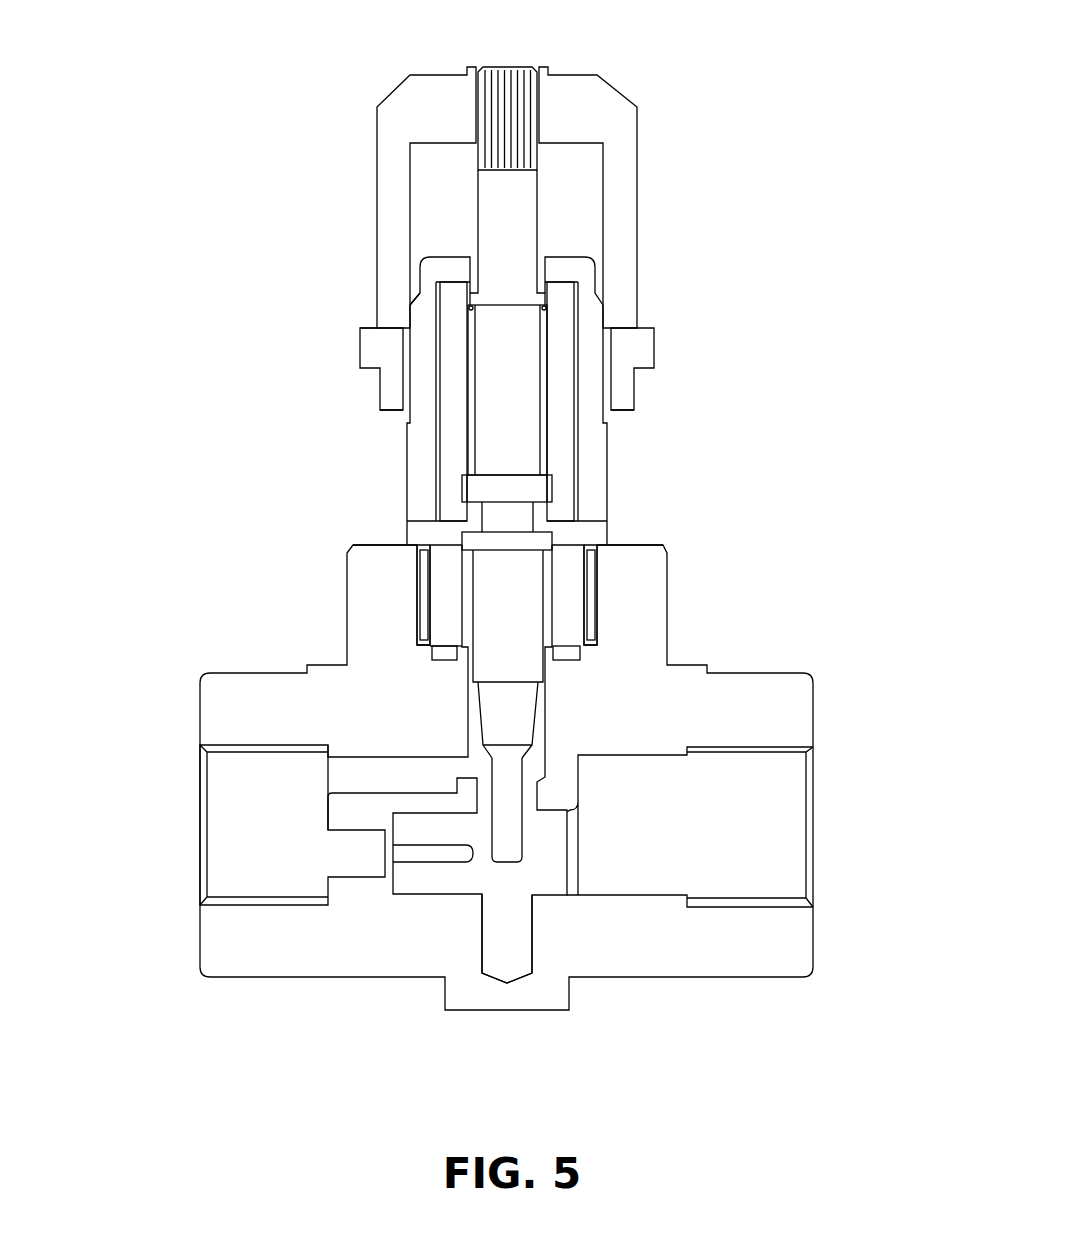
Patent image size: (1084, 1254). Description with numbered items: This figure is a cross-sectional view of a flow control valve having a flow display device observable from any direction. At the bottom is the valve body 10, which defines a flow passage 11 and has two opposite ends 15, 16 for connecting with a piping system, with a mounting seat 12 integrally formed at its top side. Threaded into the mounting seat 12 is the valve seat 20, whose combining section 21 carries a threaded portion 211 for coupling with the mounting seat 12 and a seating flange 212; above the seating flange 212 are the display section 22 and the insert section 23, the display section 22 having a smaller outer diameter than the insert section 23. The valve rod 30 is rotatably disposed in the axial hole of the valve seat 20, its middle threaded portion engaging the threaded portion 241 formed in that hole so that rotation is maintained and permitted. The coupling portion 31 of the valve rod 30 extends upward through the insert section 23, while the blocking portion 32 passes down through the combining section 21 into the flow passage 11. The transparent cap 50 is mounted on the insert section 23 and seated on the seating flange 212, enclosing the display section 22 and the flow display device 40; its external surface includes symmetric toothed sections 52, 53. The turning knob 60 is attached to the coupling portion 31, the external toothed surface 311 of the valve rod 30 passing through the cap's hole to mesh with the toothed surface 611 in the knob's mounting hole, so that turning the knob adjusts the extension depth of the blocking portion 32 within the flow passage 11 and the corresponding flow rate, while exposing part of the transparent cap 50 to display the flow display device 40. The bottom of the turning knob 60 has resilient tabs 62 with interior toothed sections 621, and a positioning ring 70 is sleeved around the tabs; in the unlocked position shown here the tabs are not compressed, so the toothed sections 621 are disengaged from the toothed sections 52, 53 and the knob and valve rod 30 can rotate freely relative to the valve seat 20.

The valve body 10 is at (258, 673).
The flow passage 11 is at (427, 877).
The mounting seat 12 is at (642, 640).
The opposite end 15 is at (200, 936).
The opposite end 16 is at (813, 936).
The valve seat 20 is at (205, 497).
The combining section 21 is at (292, 518).
The threaded portion 211 is at (443, 595).
The seating flange 212 is at (420, 540).
The display section 22 is at (455, 488).
The insert section 23 is at (455, 340).
The threaded portion 241 is at (403, 325).
The valve rod 30 is at (515, 612).
The coupling portion 31 is at (522, 217).
The external toothed surface 311 is at (507, 117).
The blocking portion 32 is at (520, 840).
The flow display device 40 is at (575, 473).
The transparent cap 50 is at (443, 262).
The toothed section 52 is at (445, 540).
The toothed section 53 is at (605, 440).
The turning knob 60 is at (622, 172).
The toothed surface 611 is at (480, 108).
The resilient tabs 62 is at (400, 396).
The toothed sections 621 is at (405, 410).
The positioning ring 70 is at (368, 330).